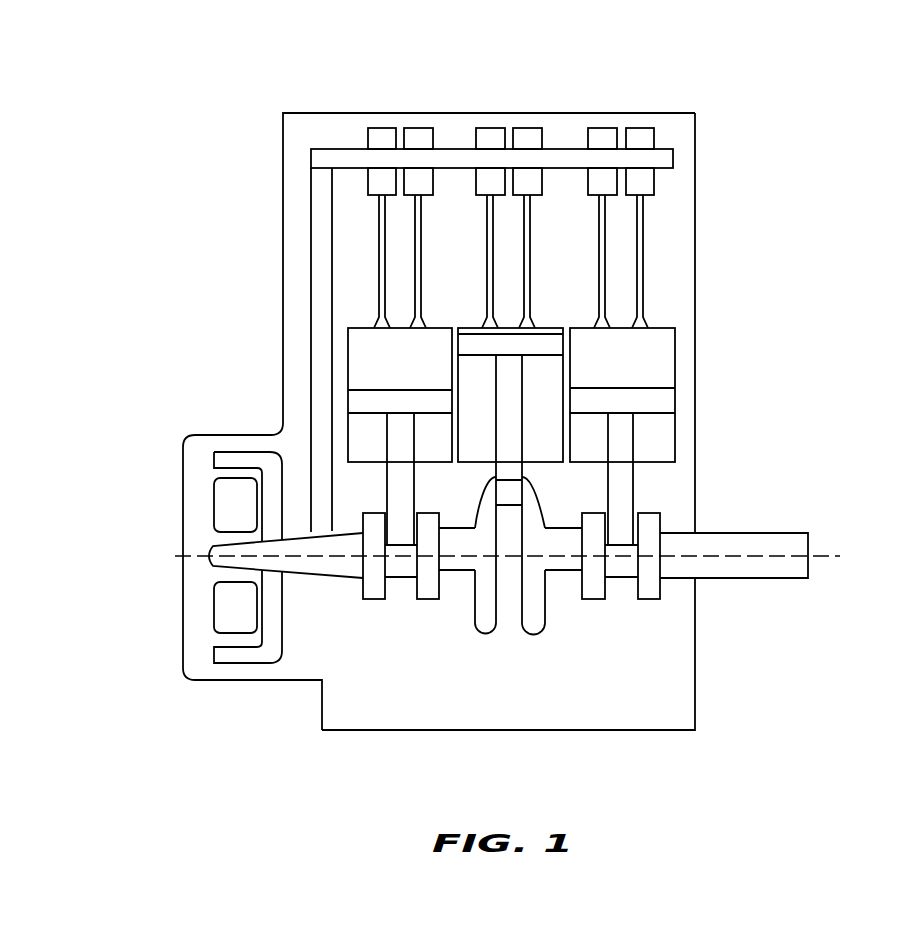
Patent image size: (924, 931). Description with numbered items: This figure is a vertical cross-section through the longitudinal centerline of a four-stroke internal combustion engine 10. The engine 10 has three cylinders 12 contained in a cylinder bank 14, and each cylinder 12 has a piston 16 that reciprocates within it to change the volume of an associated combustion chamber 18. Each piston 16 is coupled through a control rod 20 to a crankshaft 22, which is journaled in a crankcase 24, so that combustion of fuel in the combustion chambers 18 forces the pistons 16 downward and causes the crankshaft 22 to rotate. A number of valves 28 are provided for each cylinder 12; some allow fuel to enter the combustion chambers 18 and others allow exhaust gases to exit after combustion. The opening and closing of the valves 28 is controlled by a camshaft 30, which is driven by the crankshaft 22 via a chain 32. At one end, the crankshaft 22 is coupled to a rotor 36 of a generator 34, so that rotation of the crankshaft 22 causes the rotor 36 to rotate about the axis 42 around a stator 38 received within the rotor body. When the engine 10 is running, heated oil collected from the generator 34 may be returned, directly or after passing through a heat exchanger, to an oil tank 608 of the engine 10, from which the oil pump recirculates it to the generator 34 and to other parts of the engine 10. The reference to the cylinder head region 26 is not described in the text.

The internal combustion engine 10 is at (790, 91).
The cylinder 12 is at (348, 338).
The cylinder bank 14 is at (696, 432).
The piston 16 is at (398, 395).
The combustion chamber 18 is at (378, 357).
The control rod 20 is at (395, 483).
The crankshaft 22 is at (535, 612).
The crankcase 24 is at (696, 507).
The cylinder head 26 is at (727, 215).
The valve 28 is at (379, 256).
The camshaft 30 is at (568, 157).
The chain 32 is at (321, 247).
The generator 34 is at (160, 445).
The rotor 36 is at (243, 653).
The stator 38 is at (230, 608).
The axis 42 is at (170, 552).
The oil tank 608 is at (802, 419).